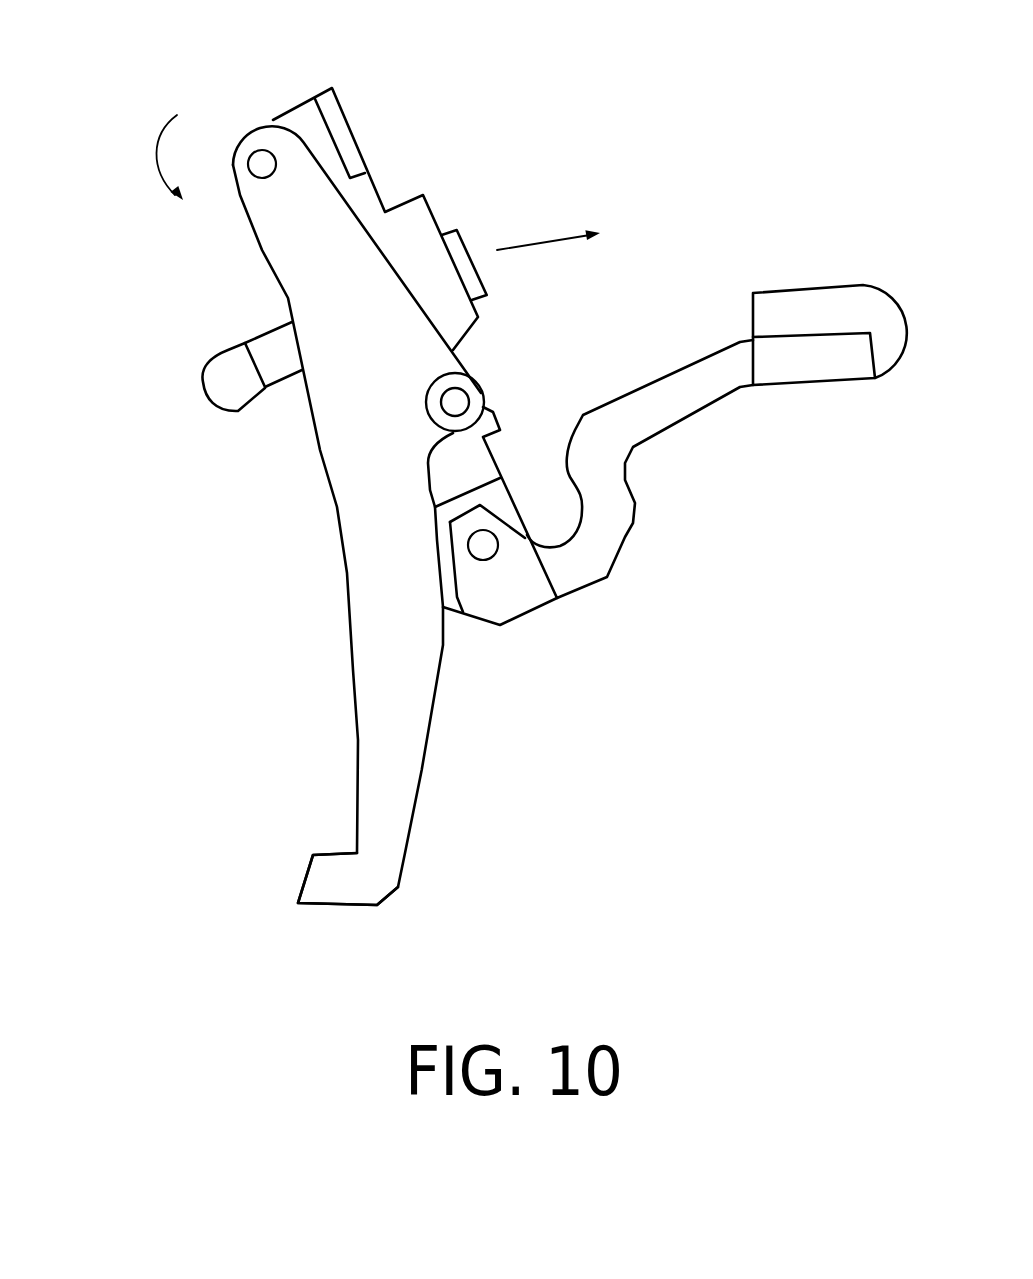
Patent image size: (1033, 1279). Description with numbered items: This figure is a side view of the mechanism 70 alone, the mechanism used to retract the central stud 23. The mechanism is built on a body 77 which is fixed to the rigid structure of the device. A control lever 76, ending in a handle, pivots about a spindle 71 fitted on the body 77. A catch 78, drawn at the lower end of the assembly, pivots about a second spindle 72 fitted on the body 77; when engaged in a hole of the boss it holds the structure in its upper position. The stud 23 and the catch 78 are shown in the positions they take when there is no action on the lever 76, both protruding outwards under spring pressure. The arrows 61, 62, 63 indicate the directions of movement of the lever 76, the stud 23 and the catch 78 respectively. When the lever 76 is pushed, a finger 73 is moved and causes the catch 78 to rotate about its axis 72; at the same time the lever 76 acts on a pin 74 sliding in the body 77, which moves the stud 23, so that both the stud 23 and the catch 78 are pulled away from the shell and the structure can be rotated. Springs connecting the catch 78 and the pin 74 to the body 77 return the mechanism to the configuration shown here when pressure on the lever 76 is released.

The mechanism 70 is at (505, 85).
The spindle 72 is at (262, 150).
The body 77 is at (303, 110).
The finger 73 is at (455, 402).
The arrow 61 is at (582, 668).
The spindle 71 is at (483, 548).
The control lever 76 is at (848, 363).
The pin 74 is at (272, 350).
The central stud 23 is at (238, 390).
The catch 78 is at (335, 885).
The arrow 63 is at (157, 157).
The arrow 62 is at (537, 240).